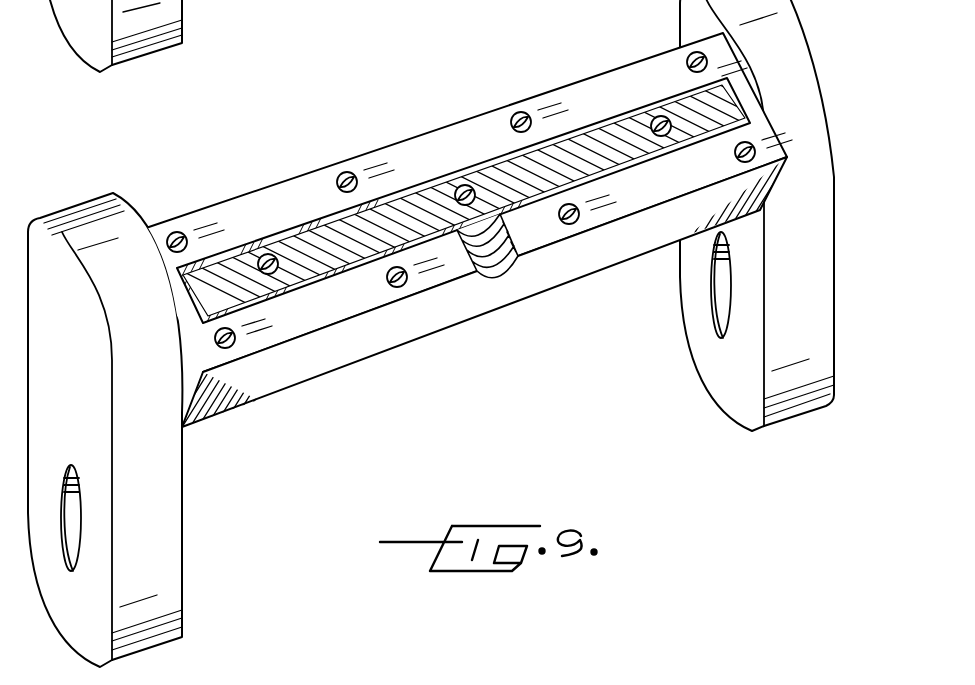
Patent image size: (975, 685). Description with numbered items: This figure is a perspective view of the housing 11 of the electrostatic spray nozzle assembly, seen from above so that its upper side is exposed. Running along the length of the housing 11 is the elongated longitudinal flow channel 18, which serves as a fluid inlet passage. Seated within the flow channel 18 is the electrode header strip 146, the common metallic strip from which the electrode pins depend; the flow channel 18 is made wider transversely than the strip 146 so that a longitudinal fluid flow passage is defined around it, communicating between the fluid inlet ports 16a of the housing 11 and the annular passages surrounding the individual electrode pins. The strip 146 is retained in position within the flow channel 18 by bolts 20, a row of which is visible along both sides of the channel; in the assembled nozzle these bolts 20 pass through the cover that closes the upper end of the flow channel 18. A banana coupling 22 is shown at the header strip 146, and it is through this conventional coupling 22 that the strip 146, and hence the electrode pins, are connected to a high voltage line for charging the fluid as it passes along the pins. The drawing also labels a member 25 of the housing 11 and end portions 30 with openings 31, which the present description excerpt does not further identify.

The housing 11 is at (487, 224).
The electrode header strip 146 is at (399, 208).
The banana coupling 22 is at (467, 185).
The elongated longitudinal flow channel 18 is at (540, 141).
The bolts 20 is at (266, 254).
The fluid inlet ports 16a is at (500, 282).
The cross member 25 is at (418, 331).
The leg 30 is at (167, 560).
The slot 31 is at (30, 0).